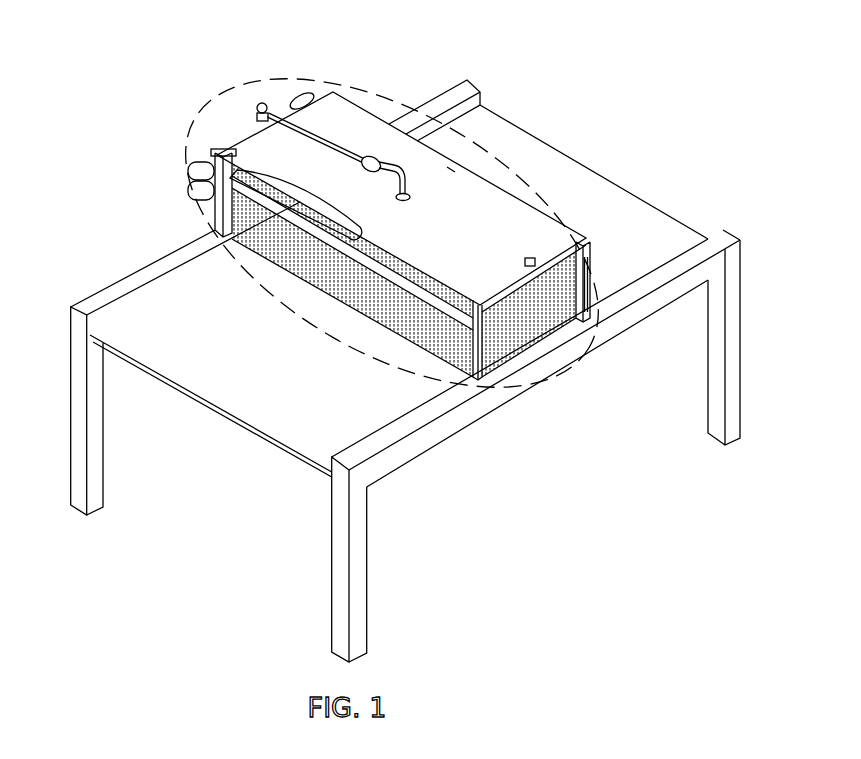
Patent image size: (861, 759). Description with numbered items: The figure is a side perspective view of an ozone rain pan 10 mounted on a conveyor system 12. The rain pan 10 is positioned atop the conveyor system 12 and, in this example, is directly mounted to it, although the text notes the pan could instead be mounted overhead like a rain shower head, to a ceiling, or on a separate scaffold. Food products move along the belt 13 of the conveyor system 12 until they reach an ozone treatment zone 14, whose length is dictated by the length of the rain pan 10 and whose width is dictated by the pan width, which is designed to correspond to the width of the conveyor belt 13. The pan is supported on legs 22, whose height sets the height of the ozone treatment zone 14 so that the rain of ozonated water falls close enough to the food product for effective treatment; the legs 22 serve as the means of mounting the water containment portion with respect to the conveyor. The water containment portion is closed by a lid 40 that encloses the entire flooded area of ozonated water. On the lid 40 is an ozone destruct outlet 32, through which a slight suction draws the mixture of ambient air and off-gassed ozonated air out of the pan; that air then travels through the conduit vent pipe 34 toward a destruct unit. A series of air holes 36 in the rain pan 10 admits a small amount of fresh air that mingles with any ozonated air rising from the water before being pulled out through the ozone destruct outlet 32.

The ozone rain pan 10 is at (375, 338).
The conveyor system 12 is at (73, 425).
The belt 13 is at (293, 397).
The ozone treatment zone 14 is at (397, 95).
The legs 22 is at (581, 283).
The ozone destruct outlet 32 is at (411, 192).
The conduit vent pipe 34 is at (260, 102).
The air holes 36 is at (243, 173).
The lid 40 is at (453, 230).